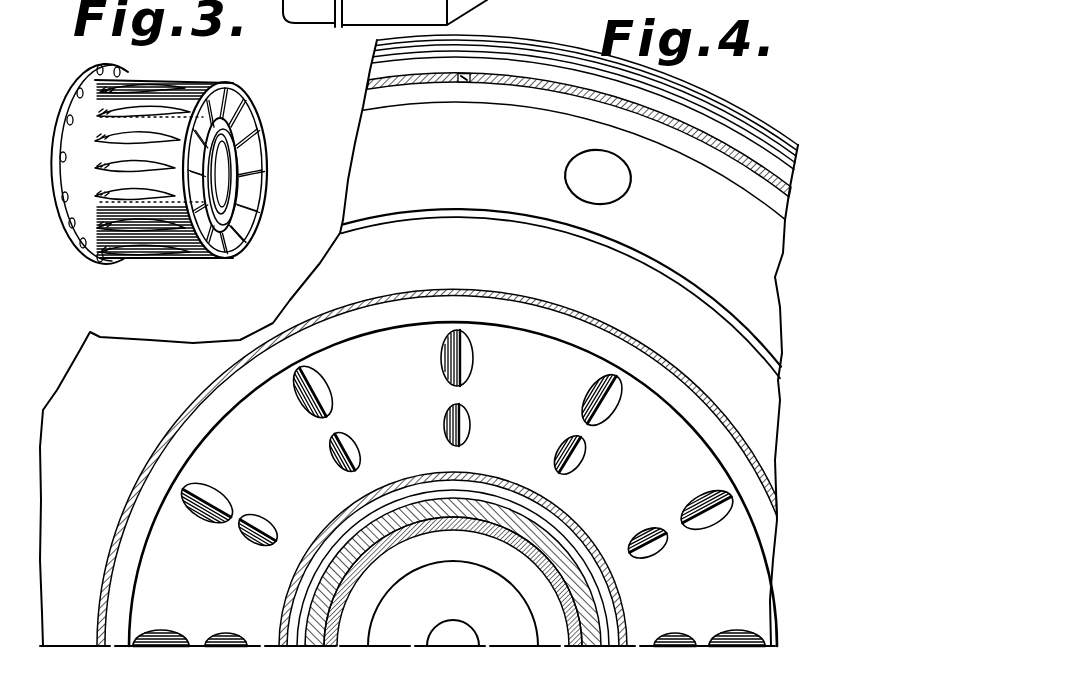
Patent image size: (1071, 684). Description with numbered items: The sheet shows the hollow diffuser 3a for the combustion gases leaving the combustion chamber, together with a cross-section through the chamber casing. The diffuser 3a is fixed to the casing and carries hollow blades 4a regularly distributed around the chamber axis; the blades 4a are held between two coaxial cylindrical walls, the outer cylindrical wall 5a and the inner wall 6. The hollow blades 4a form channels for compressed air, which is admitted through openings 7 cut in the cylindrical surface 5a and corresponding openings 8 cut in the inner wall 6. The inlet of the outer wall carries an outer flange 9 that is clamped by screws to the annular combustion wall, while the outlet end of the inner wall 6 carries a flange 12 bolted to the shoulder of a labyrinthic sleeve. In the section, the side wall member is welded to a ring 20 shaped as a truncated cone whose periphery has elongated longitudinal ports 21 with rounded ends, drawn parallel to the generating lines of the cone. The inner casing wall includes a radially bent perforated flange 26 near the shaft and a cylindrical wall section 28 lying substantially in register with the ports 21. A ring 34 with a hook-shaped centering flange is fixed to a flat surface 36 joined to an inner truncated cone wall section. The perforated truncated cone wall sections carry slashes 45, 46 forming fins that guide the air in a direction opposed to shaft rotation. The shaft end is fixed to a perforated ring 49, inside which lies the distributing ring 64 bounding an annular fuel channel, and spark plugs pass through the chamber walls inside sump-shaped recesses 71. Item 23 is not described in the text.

In FIG. 3, the diffuser 3a is at (197, 77).
In FIG. 3, the blades 4a is at (230, 112).
In FIG. 3, the cylindrical wall 5a is at (135, 183).
In FIG. 3, the inner wall 6 is at (240, 173).
In FIG. 3, the openings 7 is at (130, 88).
In FIG. 3, the openings 8 is at (247, 140).
In FIG. 3, the outer flange 9 is at (57, 147).
In FIG. 3, the flange 12 is at (238, 190).
In FIG. 4, the ring 20 is at (522, 78).
In FIG. 4, the longitudinal ports 21 is at (462, 86).
In FIG. 4, the ring 23 is at (585, 518).
In FIG. 4, the perforated flange 26 is at (405, 490).
In FIG. 4, the cylindrical wall section 28 is at (518, 306).
In FIG. 4, the ring 34 is at (697, 293).
In FIG. 4, the flat surface 36 is at (610, 262).
In FIG. 4, the slashes 45 is at (472, 359).
In FIG. 4, the slashes 46 is at (472, 424).
In FIG. 4, the perforated ring 49 is at (462, 518).
In FIG. 4, the distributing ring 64 is at (530, 556).
In FIG. 4, the sump-shaped recesses 71 is at (630, 183).